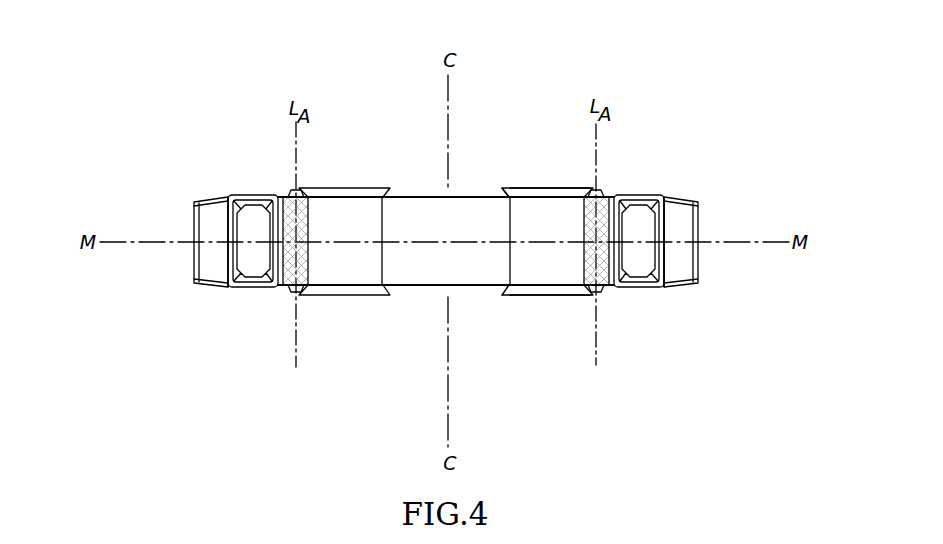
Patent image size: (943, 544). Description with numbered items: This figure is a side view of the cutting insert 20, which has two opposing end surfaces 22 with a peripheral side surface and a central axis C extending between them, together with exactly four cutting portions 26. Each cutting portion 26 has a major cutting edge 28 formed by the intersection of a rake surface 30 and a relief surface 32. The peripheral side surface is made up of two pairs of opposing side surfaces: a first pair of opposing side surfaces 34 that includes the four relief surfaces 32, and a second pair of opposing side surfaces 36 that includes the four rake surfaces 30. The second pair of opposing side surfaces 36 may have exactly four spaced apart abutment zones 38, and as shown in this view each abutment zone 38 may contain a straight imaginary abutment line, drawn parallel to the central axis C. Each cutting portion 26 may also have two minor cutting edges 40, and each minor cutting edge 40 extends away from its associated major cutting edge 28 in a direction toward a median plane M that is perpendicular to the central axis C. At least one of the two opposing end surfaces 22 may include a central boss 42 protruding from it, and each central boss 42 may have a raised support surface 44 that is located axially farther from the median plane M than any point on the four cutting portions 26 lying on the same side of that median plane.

The cutting insert 20 is at (465, 162).
The end surface 22 is at (380, 185).
The cutting portion 26 is at (208, 222).
The major cutting edge 28 is at (228, 262).
The rake surface 30 is at (237, 196).
The relief surface 32 is at (208, 258).
The first pair of opposing side surfaces 34 is at (190, 232).
The second pair of opposing side surfaces 36 is at (405, 268).
The abutment zone 38 is at (303, 227).
The minor cutting edge 40 is at (246, 227).
The central boss 42 is at (549, 185).
The raised support surface 44 is at (510, 187).